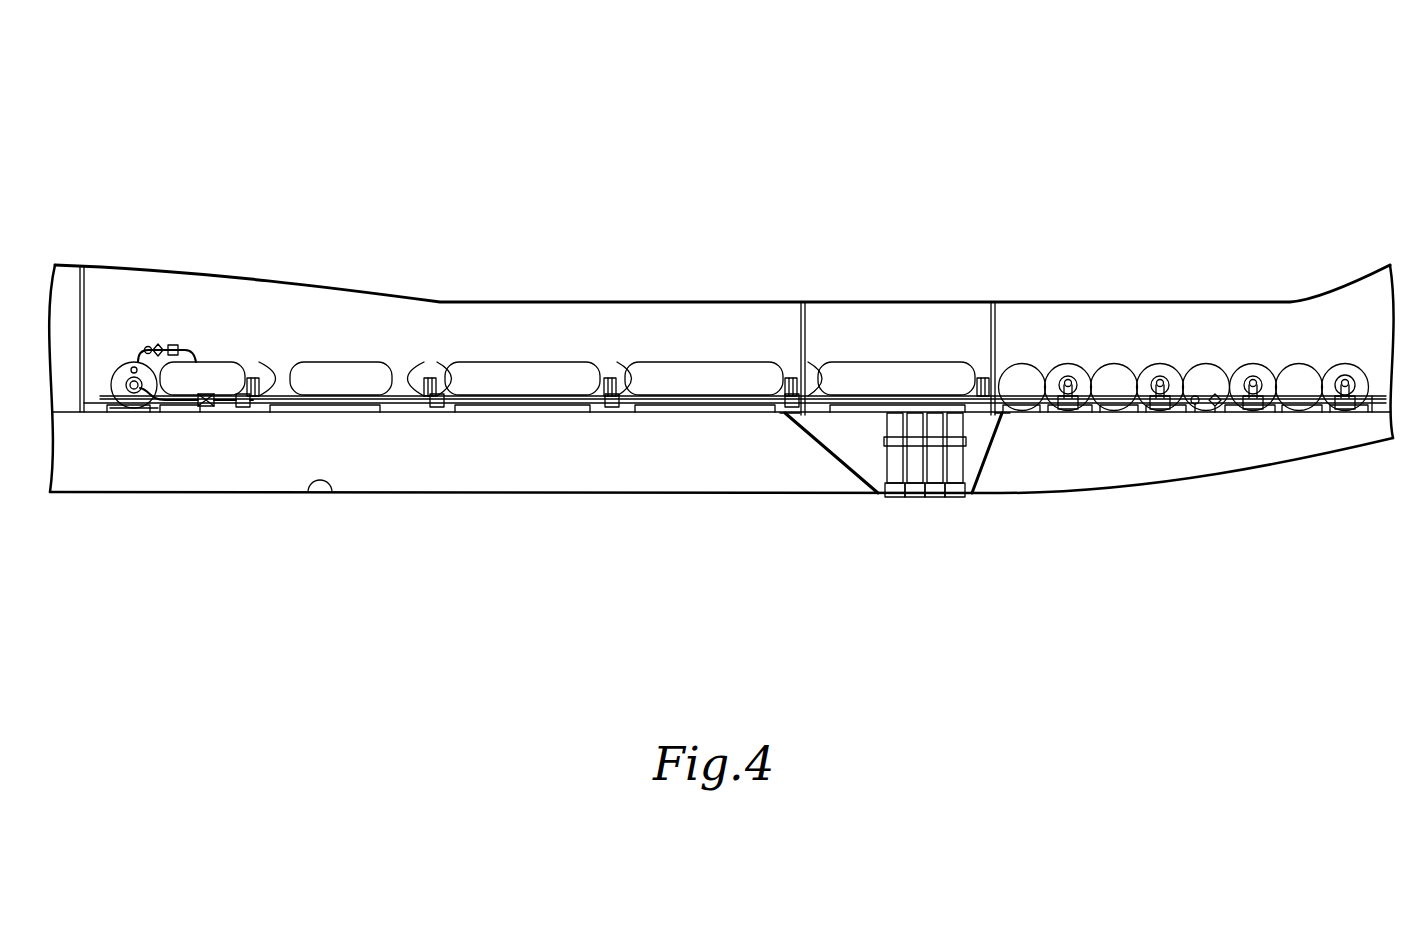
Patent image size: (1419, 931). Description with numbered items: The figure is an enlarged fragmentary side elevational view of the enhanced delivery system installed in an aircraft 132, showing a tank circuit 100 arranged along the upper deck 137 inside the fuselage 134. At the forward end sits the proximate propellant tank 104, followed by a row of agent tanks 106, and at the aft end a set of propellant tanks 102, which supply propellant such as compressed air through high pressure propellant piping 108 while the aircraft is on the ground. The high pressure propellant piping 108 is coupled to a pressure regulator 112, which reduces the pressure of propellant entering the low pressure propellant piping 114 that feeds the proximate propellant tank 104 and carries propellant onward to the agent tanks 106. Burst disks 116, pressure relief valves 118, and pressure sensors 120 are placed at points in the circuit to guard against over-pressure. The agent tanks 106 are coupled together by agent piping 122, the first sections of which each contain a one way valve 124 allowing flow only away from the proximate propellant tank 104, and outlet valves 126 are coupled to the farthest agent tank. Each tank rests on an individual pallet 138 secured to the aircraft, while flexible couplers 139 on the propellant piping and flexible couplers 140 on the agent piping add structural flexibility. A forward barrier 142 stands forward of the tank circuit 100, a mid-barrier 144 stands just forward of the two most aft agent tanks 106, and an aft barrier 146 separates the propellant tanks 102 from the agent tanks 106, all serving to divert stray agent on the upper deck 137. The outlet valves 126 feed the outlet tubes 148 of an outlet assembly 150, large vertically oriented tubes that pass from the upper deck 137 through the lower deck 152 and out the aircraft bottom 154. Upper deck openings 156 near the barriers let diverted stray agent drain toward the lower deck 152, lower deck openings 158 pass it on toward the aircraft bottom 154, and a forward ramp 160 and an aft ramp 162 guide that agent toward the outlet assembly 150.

The tank circuit 100 is at (253, 299).
The propellant tanks 102 is at (1070, 363).
The proximate propellant tank 104 is at (116, 372).
The agent tanks 106 is at (220, 361).
The high pressure propellant piping 108 is at (366, 404).
The pressure regulator 112 is at (206, 407).
The low pressure propellant piping 114 is at (138, 347).
The burst disks 116 is at (174, 345).
The pressure relief valves 118 is at (1217, 407).
The pressure sensors 120 is at (1195, 406).
The agent piping 122 is at (290, 377).
The one way valve 124 is at (253, 377).
The outlet valves 126 is at (982, 377).
The aircraft 132 is at (366, 84).
The fuselage 134 is at (1120, 300).
The upper deck 137 is at (1370, 405).
The pallets 138 is at (120, 411).
The flexible couplers 139 is at (243, 408).
The flexible couplers 140 is at (444, 380).
The forward barrier 142 is at (88, 280).
The mid-barrier 144 is at (806, 312).
The aft barrier 146 is at (996, 314).
The outlet tubes 148 is at (888, 426).
The outlet assembly 150 is at (941, 526).
The lower deck 152 is at (316, 494).
The aircraft bottom 154 is at (405, 494).
The upper deck openings 156 is at (791, 418).
The lower deck openings 158 is at (854, 474).
The forward ramp 160 is at (850, 425).
The aft ramp 162 is at (958, 467).